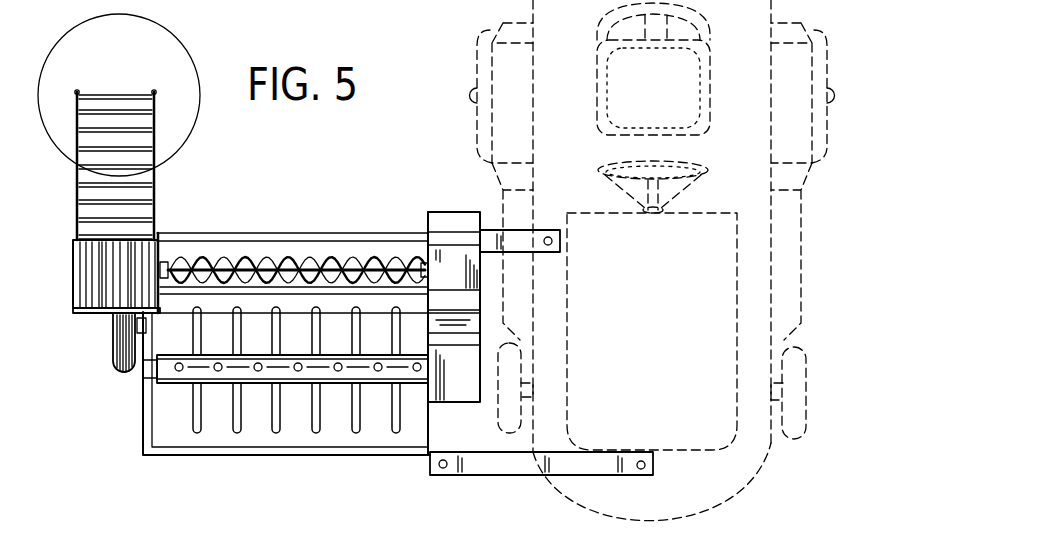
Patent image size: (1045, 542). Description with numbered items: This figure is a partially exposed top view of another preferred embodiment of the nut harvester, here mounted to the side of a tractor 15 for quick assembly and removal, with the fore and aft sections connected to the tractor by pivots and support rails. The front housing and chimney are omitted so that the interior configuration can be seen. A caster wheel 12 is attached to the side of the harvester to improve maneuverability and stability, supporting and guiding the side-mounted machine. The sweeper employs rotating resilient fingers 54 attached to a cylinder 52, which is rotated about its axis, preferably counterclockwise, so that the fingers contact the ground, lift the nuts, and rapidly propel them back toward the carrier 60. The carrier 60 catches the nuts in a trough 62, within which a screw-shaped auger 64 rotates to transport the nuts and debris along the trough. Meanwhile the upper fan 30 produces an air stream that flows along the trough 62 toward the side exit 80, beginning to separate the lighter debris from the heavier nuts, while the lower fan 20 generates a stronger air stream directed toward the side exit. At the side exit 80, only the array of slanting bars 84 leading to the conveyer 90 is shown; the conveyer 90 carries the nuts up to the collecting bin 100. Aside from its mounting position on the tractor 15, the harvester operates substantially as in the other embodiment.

The caster wheel 12 is at (117, 373).
The tractor 15 is at (757, 248).
The lower fan 20 is at (457, 390).
The upper fan 30 is at (452, 253).
The cylinder 52 is at (190, 368).
The resilient fingers 54 is at (232, 433).
The carrier 60 is at (294, 223).
The trough 62 is at (323, 258).
The auger 64 is at (378, 262).
The side exit 80 is at (82, 315).
The slanting bars 84 is at (100, 268).
The conveyer 90 is at (72, 176).
The collecting bin 100 is at (172, 57).